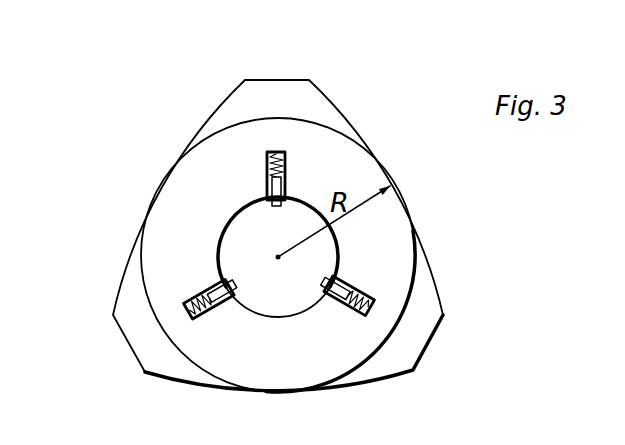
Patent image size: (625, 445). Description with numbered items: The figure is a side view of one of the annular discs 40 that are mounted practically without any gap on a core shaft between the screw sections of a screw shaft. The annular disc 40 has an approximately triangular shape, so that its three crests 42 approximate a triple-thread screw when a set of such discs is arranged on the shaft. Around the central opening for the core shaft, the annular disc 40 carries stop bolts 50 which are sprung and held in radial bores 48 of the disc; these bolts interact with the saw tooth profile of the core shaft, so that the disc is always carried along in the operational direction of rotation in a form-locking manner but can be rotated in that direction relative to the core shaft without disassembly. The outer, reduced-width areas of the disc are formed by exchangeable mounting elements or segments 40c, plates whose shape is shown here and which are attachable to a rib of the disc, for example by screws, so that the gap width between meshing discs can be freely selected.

The annular disc 40 is at (401, 203).
The exchangeable mounting segment 40c is at (430, 310).
The crest 42 is at (293, 80).
The radial bore 48 is at (222, 287).
The stop bolt 50 is at (189, 297).